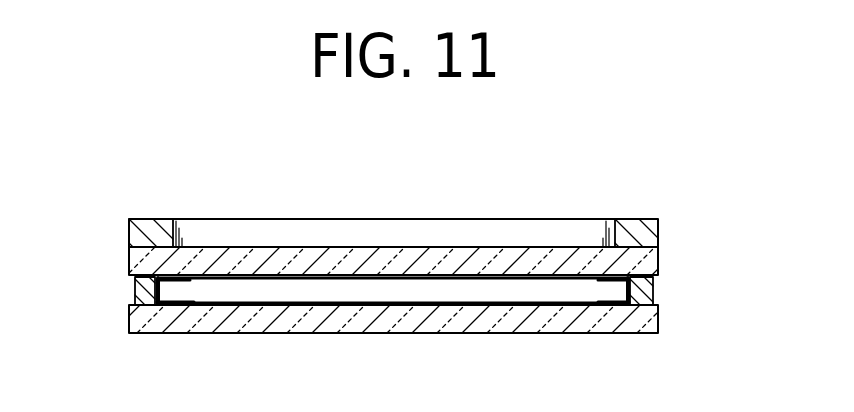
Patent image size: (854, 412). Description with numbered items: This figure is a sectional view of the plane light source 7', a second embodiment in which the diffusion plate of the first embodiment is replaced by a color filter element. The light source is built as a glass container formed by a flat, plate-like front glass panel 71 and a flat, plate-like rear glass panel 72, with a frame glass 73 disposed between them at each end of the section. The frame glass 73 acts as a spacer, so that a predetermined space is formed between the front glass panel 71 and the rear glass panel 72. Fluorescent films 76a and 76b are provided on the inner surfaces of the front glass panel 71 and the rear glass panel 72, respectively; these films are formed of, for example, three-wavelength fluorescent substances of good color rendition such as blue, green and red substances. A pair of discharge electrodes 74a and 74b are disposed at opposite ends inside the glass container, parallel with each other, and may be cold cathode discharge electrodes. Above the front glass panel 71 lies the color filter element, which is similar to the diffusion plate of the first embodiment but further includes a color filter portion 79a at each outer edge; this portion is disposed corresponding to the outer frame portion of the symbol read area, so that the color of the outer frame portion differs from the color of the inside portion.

The plane light source 7' is at (423, 270).
The front glass panel 71 is at (351, 250).
The rear glass panel 72 is at (142, 318).
The frame glass 73 is at (142, 292).
The discharge electrode 74a is at (607, 289).
The discharge electrode 74b is at (180, 302).
The fluorescent film 76a is at (528, 280).
The fluorescent film 76b is at (383, 304).
The color filter portion 79a is at (145, 219).